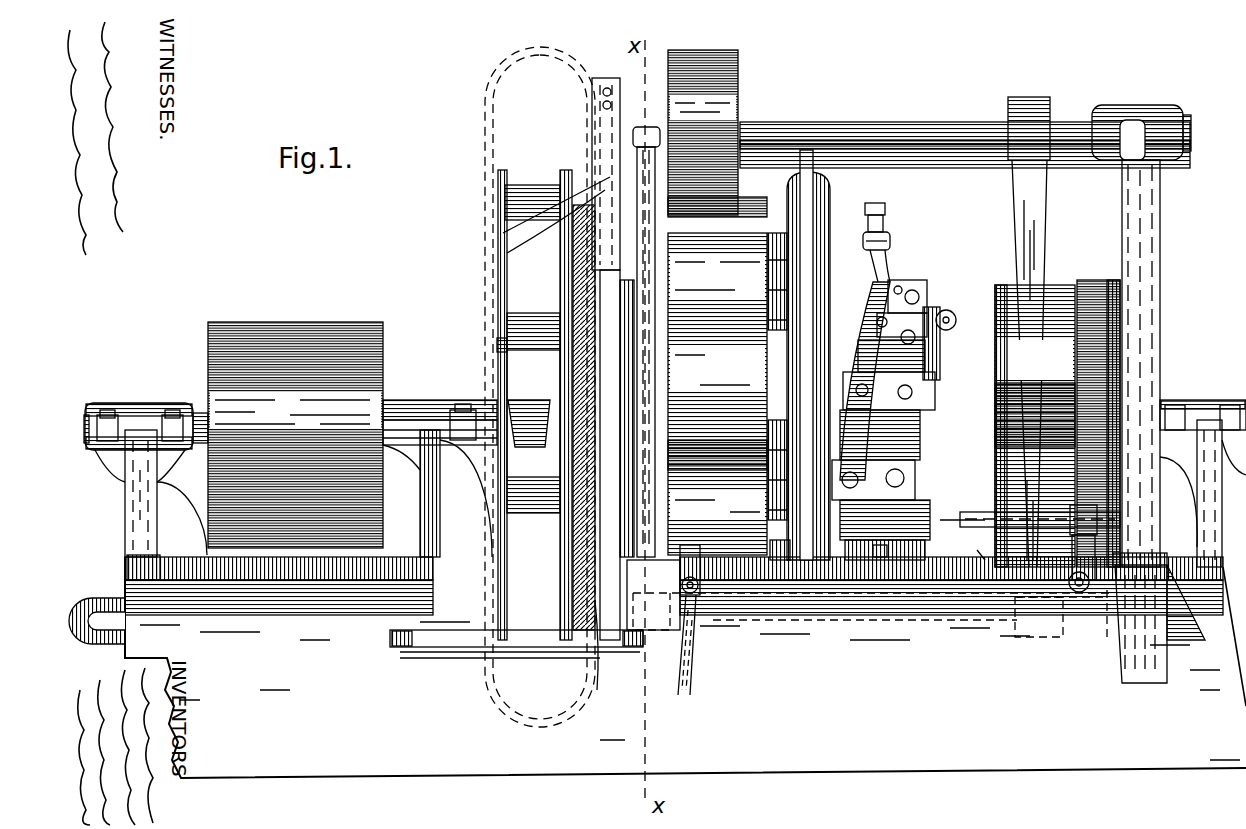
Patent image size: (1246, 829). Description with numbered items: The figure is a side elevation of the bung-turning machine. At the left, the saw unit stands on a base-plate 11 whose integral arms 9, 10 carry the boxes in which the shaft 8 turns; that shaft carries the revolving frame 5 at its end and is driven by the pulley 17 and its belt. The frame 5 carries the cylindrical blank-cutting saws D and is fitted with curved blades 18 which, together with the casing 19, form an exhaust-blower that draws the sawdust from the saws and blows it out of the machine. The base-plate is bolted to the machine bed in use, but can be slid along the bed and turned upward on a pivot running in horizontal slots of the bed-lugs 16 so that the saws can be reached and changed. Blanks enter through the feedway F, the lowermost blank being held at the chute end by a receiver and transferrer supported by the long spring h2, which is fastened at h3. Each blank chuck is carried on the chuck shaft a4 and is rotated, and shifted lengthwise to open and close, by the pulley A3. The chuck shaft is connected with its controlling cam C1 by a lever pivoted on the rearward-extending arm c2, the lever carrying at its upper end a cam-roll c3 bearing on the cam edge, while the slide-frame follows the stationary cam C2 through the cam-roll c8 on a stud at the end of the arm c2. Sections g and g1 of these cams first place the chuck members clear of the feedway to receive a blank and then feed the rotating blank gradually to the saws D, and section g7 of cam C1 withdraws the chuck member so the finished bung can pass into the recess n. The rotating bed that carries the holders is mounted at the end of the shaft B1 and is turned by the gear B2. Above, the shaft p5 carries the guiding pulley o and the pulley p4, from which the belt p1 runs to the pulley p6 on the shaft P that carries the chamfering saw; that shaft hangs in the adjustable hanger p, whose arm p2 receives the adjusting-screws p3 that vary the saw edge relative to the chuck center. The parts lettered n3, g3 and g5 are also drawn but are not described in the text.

The casing 19 is at (503, 75).
The curved blades 18 is at (512, 183).
The pulley 17 is at (295, 435).
The bed-lugs 16 is at (94, 598).
The base-plate 11 is at (325, 576).
The arm 10 is at (441, 522).
The arm 9 is at (118, 477).
The shaft 8 is at (197, 448).
The revolving frame 5 is at (497, 348).
The blank-cutting saws D is at (587, 352).
The long spring h2 is at (553, 237).
The feedway F is at (597, 86).
The rod n3 is at (613, 467).
The recess n is at (599, 664).
The fastening point of spring h3 is at (614, 98).
The guiding-pulley o is at (742, 88).
The pulley A3 is at (717, 394).
The chuck shaft a4 is at (778, 410).
The shaft p5 is at (870, 127).
The pulley p4 is at (1052, 107).
The belt p1 is at (1140, 580).
The gear B2 is at (1120, 302).
The bed shaft B1 is at (1052, 397).
The rod g5 is at (927, 440).
The cam-roll c3 is at (885, 207).
The cam C1 is at (873, 300).
The block g3 is at (930, 313).
The cam section g is at (878, 330).
The cam-roll c8 is at (945, 335).
The stationary cam C2 is at (940, 348).
The cam section g1 is at (927, 367).
The cam section g7 is at (862, 413).
The rearward-extending arm c2 is at (887, 553).
The adjusting-screws p3 is at (710, 640).
The shaft P is at (820, 632).
The adjustable hanger p is at (977, 550).
The pulley p6 is at (1025, 635).
The arm p2 is at (1098, 628).